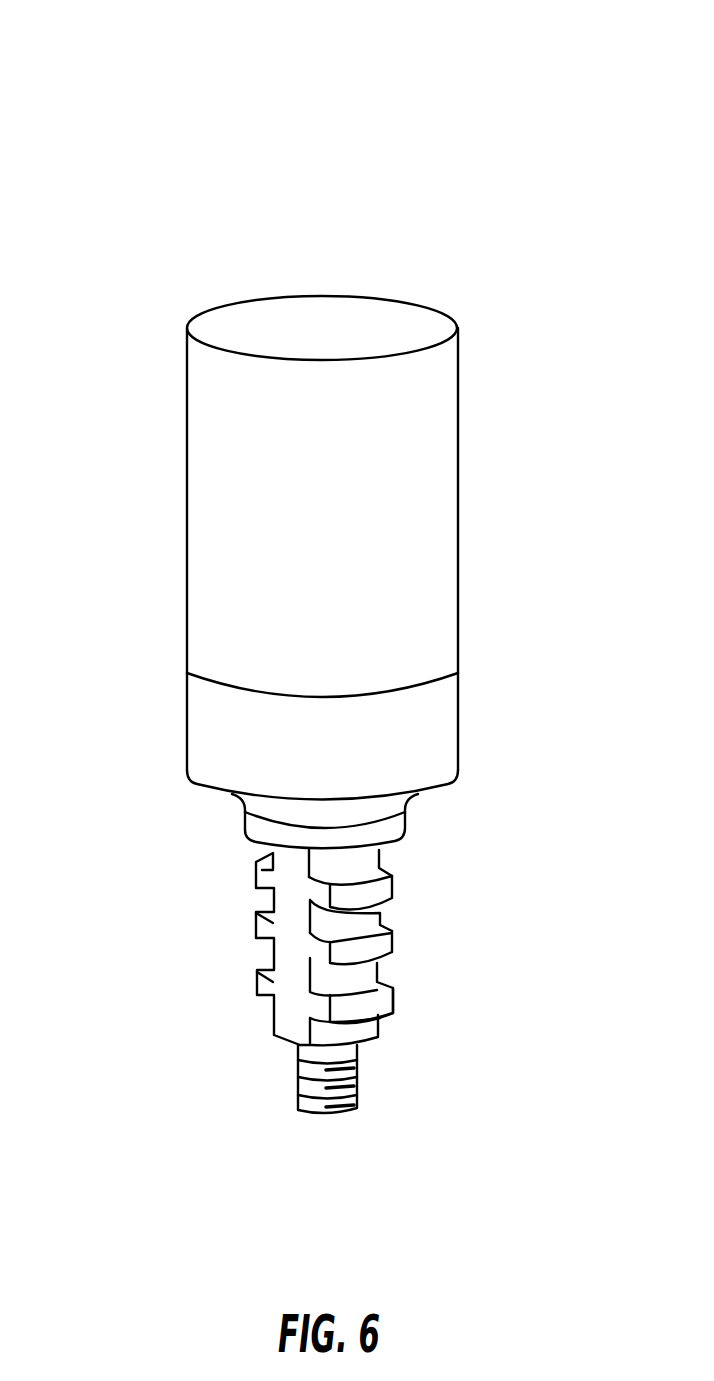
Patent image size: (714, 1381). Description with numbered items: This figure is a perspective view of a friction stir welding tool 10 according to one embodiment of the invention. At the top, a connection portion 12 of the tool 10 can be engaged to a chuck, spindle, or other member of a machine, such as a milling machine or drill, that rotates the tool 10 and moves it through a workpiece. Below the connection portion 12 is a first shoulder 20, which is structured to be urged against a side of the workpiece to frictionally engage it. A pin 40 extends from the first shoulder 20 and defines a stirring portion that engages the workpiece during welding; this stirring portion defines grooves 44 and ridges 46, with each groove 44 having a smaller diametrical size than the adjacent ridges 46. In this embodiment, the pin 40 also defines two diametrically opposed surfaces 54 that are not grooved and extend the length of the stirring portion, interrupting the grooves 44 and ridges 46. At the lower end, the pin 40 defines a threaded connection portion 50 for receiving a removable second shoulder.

The friction stir welding tool 10 is at (320, 188).
The connection portion 12 is at (187, 470).
The first shoulder 20 is at (208, 790).
The groove 44 is at (363, 915).
The surface 54 is at (395, 938).
The ridge 46 is at (380, 1009).
The pin 40 is at (298, 1087).
The connection portion 50 is at (357, 1083).